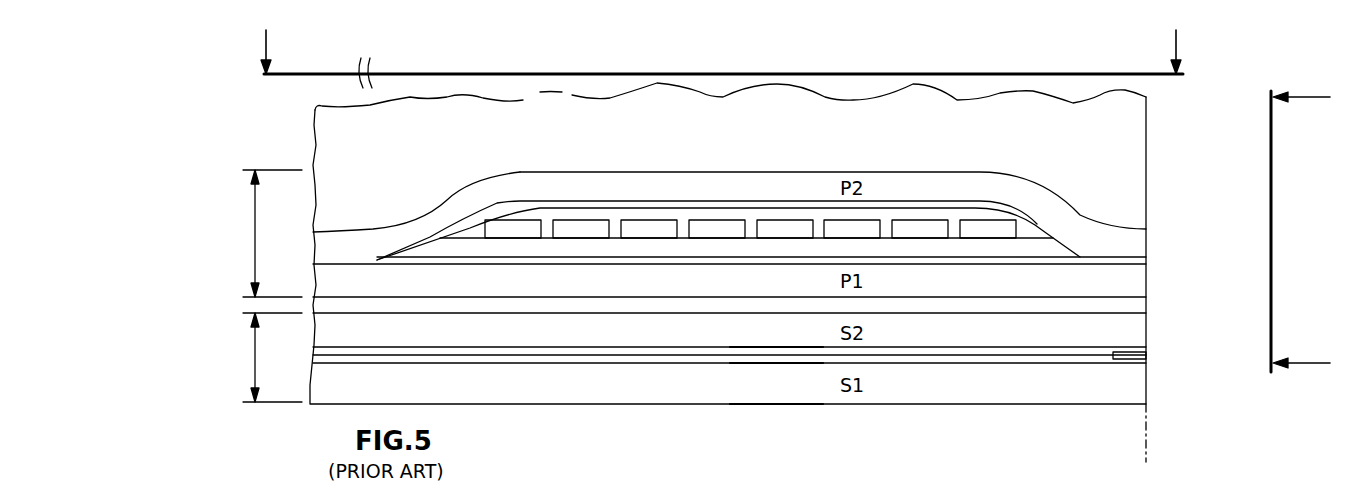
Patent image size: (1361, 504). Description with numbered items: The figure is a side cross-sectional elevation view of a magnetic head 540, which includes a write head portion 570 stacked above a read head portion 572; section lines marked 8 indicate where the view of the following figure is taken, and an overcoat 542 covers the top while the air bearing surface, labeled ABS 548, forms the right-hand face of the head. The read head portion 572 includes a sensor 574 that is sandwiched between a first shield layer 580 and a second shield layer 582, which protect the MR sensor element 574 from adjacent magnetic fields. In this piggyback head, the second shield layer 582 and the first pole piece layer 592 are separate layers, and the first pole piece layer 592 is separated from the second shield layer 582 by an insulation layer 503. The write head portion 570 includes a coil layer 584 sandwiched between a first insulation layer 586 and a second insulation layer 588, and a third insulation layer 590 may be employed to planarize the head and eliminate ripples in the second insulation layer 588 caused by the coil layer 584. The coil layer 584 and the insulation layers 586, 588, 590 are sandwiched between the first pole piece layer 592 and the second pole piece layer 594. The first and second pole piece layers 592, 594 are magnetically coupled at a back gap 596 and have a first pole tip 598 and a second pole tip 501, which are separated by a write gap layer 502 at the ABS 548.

The section line 8- 8 is at (795, 204).
The magnetic head 540 is at (293, 123).
The overcoat layer 542 is at (1133, 127).
The back gap 596 is at (347, 232).
The second pole piece layer 594 is at (922, 185).
The third insulation layer 590 is at (553, 203).
The second insulation layer 588 is at (1030, 230).
The coil layer 584 is at (782, 225).
The first insulation layer 586 is at (683, 250).
The second pole tip 501 is at (1140, 240).
The write gap layer 502 is at (1147, 260).
The first pole tip 598 is at (1147, 287).
The insulation layer 503 is at (613, 310).
The first pole piece layer 592 is at (1060, 290).
The sensor 574 is at (1147, 355).
The second shield layer 582 is at (997, 333).
The first shield layer 580 is at (928, 388).
The air bearing surface 548 is at (1146, 458).
The write head portion 570 is at (255, 238).
The read head portion 572 is at (255, 362).